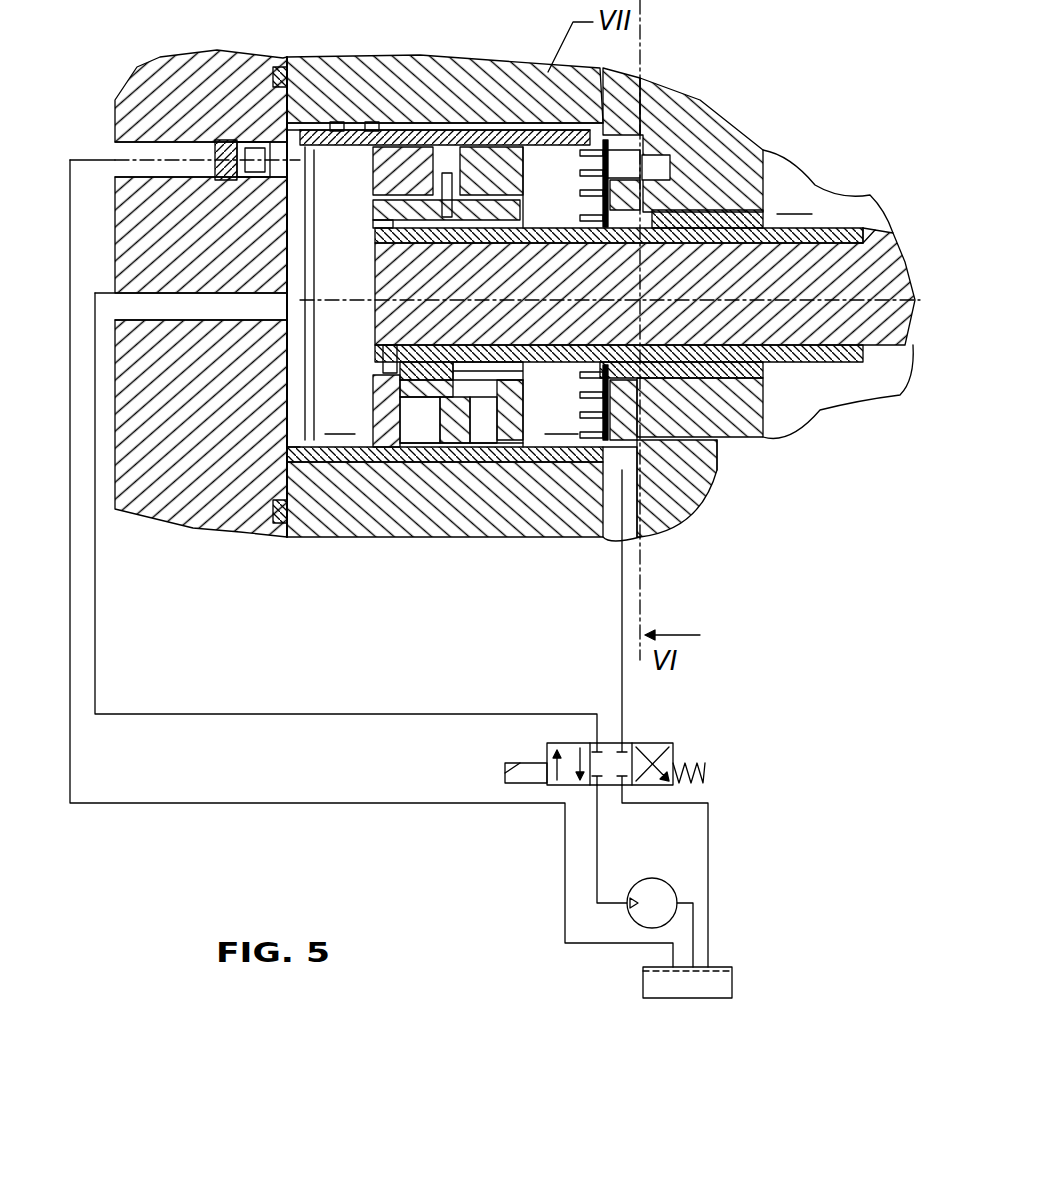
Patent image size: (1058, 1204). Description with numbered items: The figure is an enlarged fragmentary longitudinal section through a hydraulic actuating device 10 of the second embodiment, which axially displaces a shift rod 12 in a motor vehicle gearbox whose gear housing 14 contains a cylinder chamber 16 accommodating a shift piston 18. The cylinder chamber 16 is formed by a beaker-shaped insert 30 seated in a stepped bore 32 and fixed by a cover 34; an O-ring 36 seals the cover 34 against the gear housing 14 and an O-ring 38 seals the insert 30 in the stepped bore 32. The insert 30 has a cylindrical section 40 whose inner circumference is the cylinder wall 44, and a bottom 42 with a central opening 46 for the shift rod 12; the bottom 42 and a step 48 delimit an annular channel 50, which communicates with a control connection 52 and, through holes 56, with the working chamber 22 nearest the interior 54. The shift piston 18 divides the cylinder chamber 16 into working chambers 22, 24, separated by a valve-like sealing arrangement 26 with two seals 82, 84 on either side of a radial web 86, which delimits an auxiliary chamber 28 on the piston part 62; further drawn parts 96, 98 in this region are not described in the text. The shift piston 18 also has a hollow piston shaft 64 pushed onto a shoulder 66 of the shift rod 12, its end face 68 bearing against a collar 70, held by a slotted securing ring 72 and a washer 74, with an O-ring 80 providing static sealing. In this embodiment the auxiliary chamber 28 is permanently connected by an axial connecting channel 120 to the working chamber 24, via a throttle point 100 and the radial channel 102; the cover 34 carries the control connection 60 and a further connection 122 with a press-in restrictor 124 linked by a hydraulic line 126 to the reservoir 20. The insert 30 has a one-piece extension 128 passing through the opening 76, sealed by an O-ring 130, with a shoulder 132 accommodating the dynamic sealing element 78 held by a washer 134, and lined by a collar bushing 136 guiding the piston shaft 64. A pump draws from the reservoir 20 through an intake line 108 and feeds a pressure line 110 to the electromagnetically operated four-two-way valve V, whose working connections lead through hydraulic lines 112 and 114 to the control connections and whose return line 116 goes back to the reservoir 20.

The hydraulic actuating device 10 is at (333, 487).
The shift rod 12 is at (893, 240).
The gear housing 14 is at (667, 117).
The cylinder chamber 16 is at (302, 157).
The shift piston 18 is at (405, 410).
The reservoir 20 is at (713, 983).
The working chamber 22 is at (561, 421).
The working chamber 24 is at (341, 421).
The sealing arrangement 26 is at (400, 95).
The auxiliary chamber 28 is at (438, 400).
The insert 30 is at (460, 400).
The stepped bore 32 is at (610, 100).
The cover 34 is at (190, 77).
The O-ring 36 is at (281, 67).
The O-ring 38 is at (337, 122).
The cylindrical section 40 is at (490, 405).
The bottom 42 is at (588, 386).
The cylinder wall 44 is at (530, 440).
The central opening 46 is at (569, 183).
The step 48 is at (693, 488).
The annular channel 50 is at (628, 120).
The control connection 52 is at (613, 512).
The interior 54 is at (794, 201).
The holes 56 is at (630, 150).
The control connection 60 is at (137, 283).
The piston part 62 is at (377, 393).
The piston shaft 64 is at (787, 372).
The shoulder 66 is at (830, 368).
The end face 68 is at (860, 350).
The collar 70 is at (862, 230).
The securing ring 72 is at (382, 357).
The washer 74 is at (386, 346).
The opening 76 is at (735, 420).
The sealing element 78 is at (612, 160).
The O-ring 80 is at (385, 268).
The seal 82 is at (470, 115).
The seal 84 is at (410, 140).
The radial web 86 is at (448, 445).
The bottom plate 96 is at (497, 445).
The disc spring 98 is at (420, 440).
The throttle point 100 is at (372, 184).
The channel 102 is at (523, 182).
The intake line 108 is at (693, 923).
The pressure line 110 is at (598, 872).
The hydraulic line 112 is at (620, 658).
The hydraulic line 114 is at (490, 714).
The return line 116 is at (710, 887).
The connecting channel 120 is at (380, 232).
The connection 122 is at (122, 150).
The press-in restrictor 124 is at (213, 138).
The hydraulic line 126 is at (235, 803).
The extension 128 is at (678, 530).
The O-ring 130 is at (672, 212).
The shoulder 132 is at (657, 480).
The washer 134 is at (585, 470).
The collar bushing 136 is at (765, 380).
The 4/2-way valve V is at (653, 737).